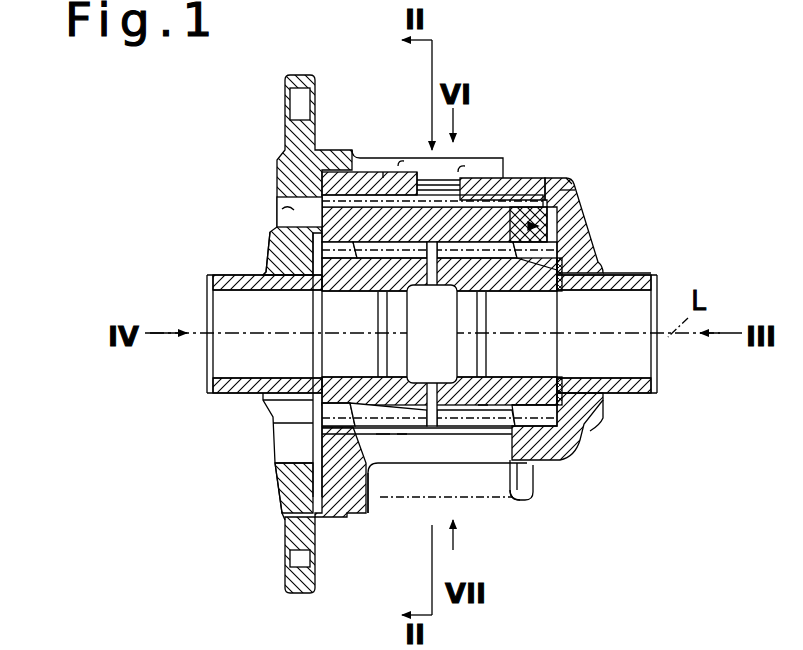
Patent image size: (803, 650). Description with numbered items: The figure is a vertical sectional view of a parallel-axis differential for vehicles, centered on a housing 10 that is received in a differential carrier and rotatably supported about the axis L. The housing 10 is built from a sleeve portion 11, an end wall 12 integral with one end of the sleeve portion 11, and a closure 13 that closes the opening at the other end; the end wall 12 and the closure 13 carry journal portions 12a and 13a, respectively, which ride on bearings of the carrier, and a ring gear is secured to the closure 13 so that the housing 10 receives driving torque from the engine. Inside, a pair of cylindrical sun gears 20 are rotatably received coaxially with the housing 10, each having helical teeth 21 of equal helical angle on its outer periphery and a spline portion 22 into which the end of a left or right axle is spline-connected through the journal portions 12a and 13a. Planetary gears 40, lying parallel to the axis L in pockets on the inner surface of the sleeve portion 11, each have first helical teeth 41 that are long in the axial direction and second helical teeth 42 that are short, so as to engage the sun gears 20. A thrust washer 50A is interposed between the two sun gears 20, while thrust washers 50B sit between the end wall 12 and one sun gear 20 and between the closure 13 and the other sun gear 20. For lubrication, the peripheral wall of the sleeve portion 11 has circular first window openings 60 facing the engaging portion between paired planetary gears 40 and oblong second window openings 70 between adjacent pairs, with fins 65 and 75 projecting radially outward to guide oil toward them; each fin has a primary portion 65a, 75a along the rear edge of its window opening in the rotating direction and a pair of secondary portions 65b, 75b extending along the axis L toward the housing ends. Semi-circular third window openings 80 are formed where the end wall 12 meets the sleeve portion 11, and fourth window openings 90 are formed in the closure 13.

The housing 10 is at (560, 160).
The sleeve portion 11 is at (478, 220).
The end wall 12 is at (590, 233).
The journal portion 12a is at (633, 273).
The closure 13 is at (277, 171).
The journal portion 13a is at (243, 268).
The sun gear 20 is at (270, 260).
The helical teeth 21 is at (402, 428).
The spline portion 22 is at (298, 356).
The planetary gear 40 is at (541, 170).
The first helical teeth 41 is at (368, 172).
The second helical teeth 42 is at (568, 166).
The thrust washer 50A is at (460, 405).
The thrust washer 50B is at (303, 392).
The first window opening 60 is at (400, 173).
The fin 65 is at (423, 156).
The primary portion 65a is at (450, 160).
The secondary portion 65b is at (384, 172).
The second window opening 70 is at (381, 434).
The fin 75 is at (476, 509).
The primary portion 75a is at (462, 500).
The secondary portion 75b is at (367, 507).
The third window opening 80 is at (570, 194).
The fourth window opening 90 is at (292, 212).